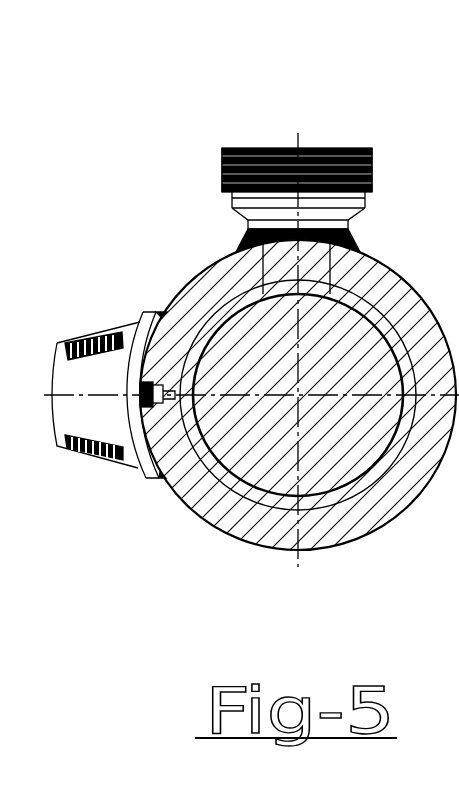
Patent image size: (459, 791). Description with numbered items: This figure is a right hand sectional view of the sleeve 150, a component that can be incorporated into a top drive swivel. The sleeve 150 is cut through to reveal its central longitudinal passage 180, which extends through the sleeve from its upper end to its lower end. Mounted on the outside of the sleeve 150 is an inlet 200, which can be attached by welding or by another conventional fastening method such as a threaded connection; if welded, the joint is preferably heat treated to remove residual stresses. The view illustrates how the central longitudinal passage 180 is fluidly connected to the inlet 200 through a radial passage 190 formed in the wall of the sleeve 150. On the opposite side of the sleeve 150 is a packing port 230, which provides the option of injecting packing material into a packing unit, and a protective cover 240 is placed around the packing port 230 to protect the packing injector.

The sleeve 150 is at (166, 216).
The central longitudinal passage 180 is at (266, 386).
The radial passage 190 is at (310, 275).
The inlet 200 is at (320, 150).
The packing port 230 is at (135, 410).
The protective cover 240 is at (62, 412).